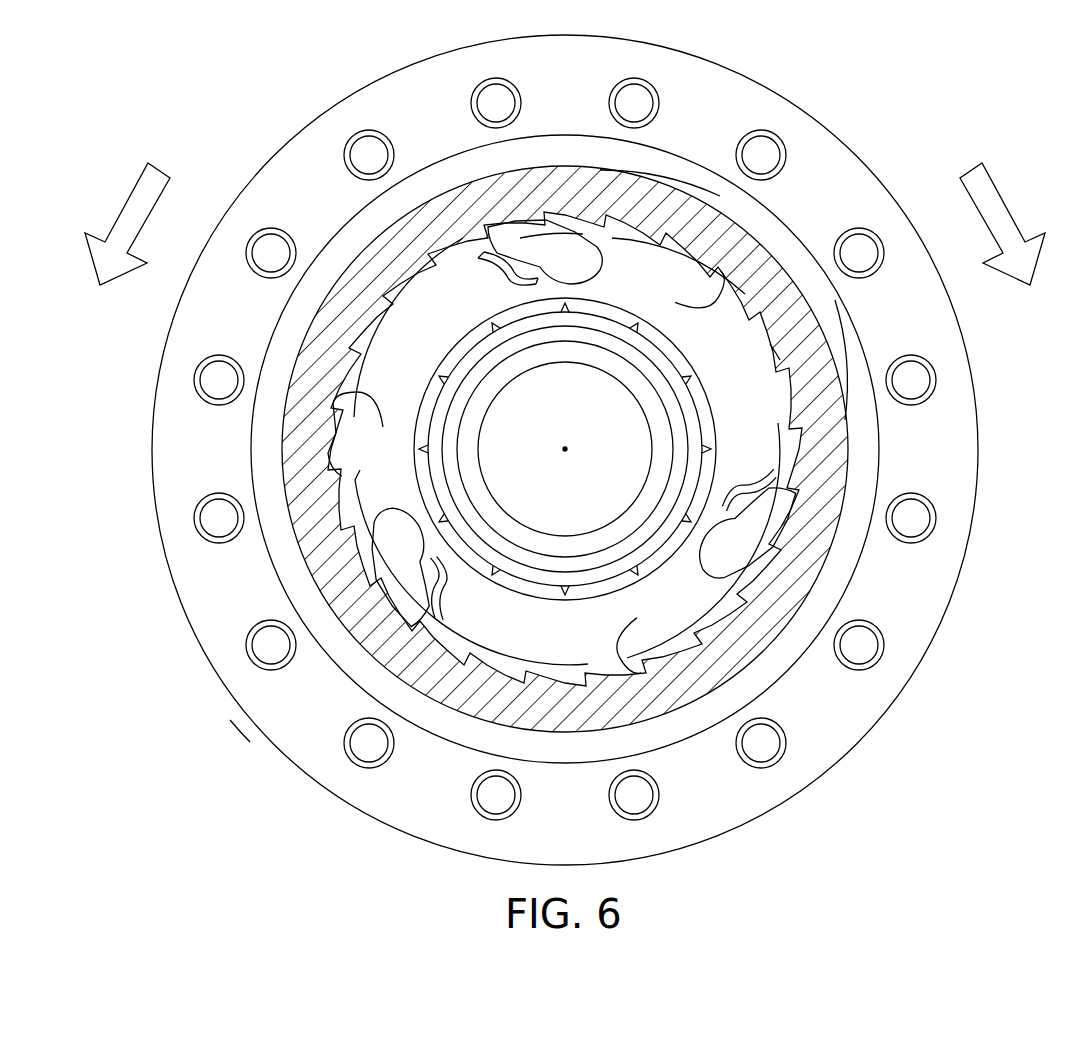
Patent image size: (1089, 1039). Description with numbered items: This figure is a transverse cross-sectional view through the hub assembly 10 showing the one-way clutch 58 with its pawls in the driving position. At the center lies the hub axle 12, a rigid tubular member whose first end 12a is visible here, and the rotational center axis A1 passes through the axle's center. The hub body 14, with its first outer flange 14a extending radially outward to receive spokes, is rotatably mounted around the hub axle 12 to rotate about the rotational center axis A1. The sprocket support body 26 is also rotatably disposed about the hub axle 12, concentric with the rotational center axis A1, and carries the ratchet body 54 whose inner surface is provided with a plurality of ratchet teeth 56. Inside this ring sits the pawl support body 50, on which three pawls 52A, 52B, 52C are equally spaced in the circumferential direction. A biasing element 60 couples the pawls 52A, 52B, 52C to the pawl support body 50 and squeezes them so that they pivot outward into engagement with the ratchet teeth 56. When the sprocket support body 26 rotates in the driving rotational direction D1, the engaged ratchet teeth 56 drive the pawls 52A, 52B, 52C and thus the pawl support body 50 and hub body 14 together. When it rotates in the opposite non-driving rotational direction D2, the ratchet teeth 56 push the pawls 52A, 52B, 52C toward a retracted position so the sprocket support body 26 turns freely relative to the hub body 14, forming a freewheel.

The hub assembly 10 is at (263, 72).
The hub axle 12 is at (647, 372).
The first end 12a is at (585, 545).
The hub body 14 is at (852, 140).
The first outer flange 14a is at (268, 746).
The sprocket support body 26 is at (858, 437).
The pawl support body 50 is at (372, 340).
The pawl 52A is at (568, 238).
The pawl 52B is at (766, 563).
The pawl 52C is at (380, 552).
The ratchet body 54 is at (825, 327).
The ratchet teeth 56 is at (340, 455).
The one-way clutch 58 is at (667, 178).
The biasing element 60 is at (500, 272).
The rotational center axis A1 is at (563, 447).
The driving rotational direction D1 is at (1000, 193).
The non-driving rotational direction D2 is at (130, 193).